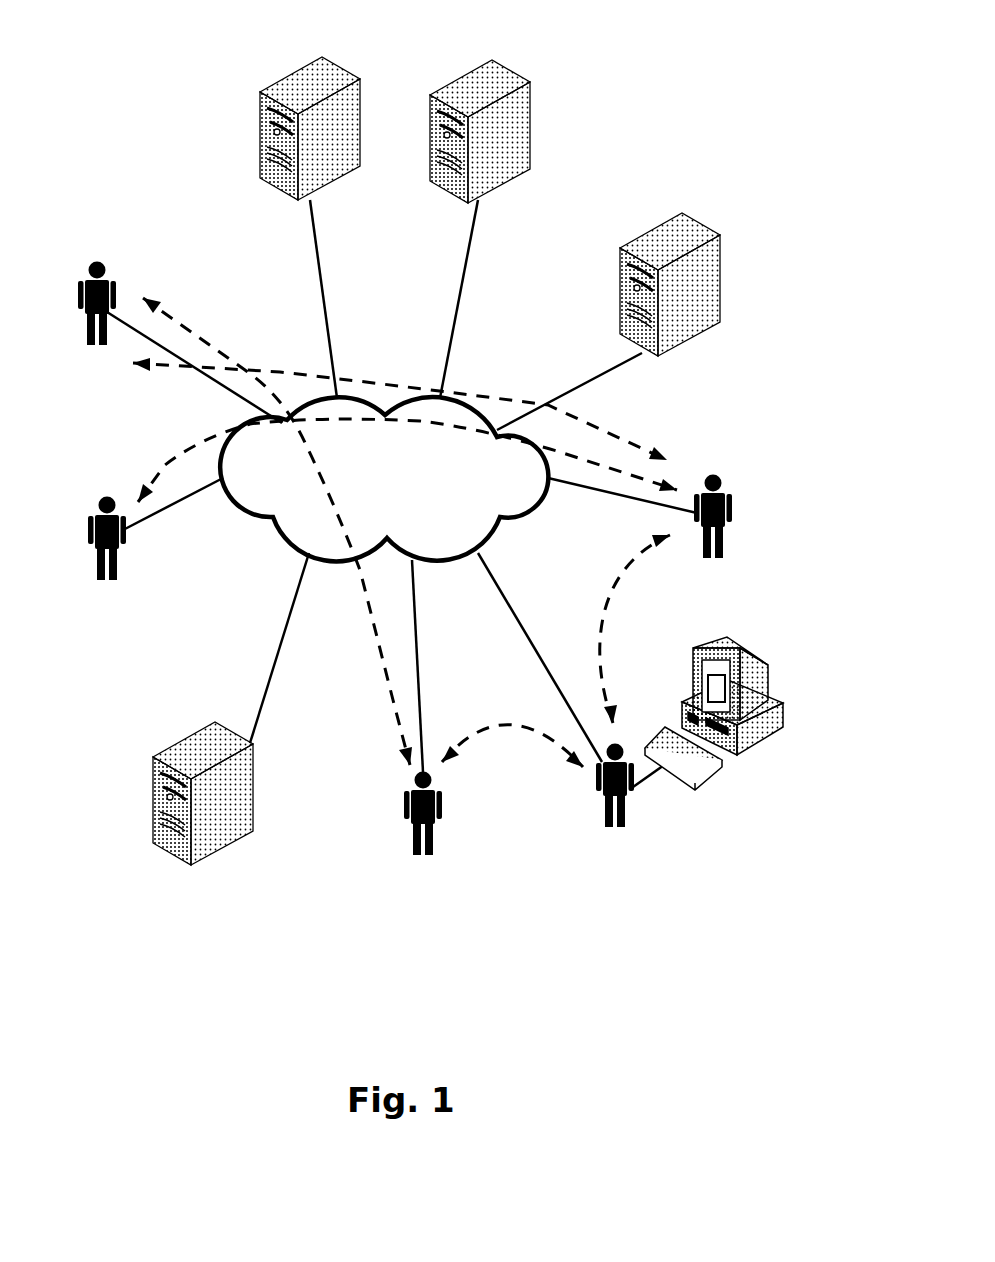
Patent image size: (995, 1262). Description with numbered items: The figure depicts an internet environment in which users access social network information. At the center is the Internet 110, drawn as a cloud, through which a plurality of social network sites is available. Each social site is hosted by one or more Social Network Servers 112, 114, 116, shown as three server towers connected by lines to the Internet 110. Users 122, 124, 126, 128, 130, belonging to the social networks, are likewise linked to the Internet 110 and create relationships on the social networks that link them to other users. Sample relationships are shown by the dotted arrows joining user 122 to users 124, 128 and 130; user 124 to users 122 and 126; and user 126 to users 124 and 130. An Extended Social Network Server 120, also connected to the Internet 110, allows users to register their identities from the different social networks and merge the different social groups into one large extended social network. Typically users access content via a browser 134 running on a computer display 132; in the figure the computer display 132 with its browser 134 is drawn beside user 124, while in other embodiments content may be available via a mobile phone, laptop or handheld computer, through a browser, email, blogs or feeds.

The Internet 110 is at (465, 395).
The Social Network Server 112 is at (185, 862).
The Social Network Server 114 is at (260, 180).
The Social Network Server 116 is at (530, 143).
The Extended Social Network Server 120 is at (720, 267).
The user 122 is at (713, 472).
The user 124 is at (625, 815).
The user 126 is at (442, 797).
The user 128 is at (123, 555).
The user 130 is at (110, 263).
The computer display 132 is at (768, 668).
The browser 134 is at (718, 690).